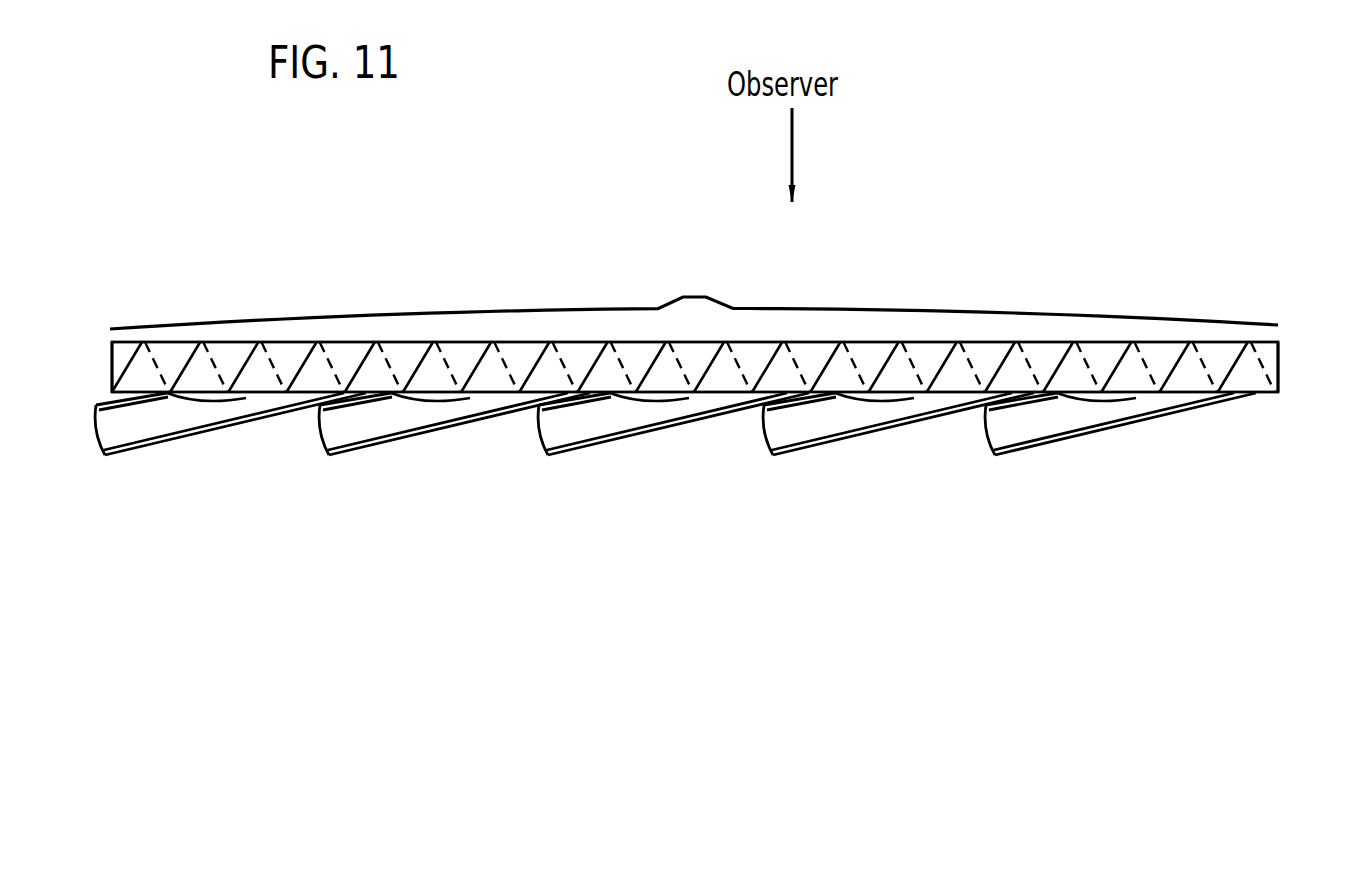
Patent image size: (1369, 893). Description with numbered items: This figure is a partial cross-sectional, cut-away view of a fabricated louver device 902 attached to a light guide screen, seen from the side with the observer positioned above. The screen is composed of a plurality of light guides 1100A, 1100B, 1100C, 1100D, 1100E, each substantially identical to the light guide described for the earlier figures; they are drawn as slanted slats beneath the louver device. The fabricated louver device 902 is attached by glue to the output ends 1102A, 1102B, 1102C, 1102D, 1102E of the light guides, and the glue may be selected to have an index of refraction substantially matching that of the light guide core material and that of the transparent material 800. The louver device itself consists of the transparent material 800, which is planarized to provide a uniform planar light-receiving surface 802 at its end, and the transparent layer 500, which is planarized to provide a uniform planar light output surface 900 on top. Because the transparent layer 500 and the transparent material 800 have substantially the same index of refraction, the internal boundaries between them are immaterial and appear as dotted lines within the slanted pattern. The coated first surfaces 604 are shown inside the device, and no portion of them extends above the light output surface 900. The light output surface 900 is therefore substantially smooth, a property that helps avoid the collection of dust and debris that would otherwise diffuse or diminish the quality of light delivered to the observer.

The light output surface 900 is at (1330, 275).
The fabricated louver device 902 is at (1162, 327).
The transparent layer 500 is at (1045, 353).
The transparent material 800 is at (1247, 377).
The light-receiving surface 802 is at (1267, 395).
The coated first surfaces 604 is at (112, 366).
The light guide 1100A is at (178, 442).
The light guide 1100B is at (390, 440).
The light guide 1100C is at (617, 438).
The light guide 1100D is at (830, 441).
The light guide 1100E is at (1043, 443).
The output end 1102A is at (246, 398).
The output end 1102B is at (470, 398).
The output end 1102C is at (689, 398).
The output end 1102D is at (914, 398).
The output end 1102E is at (1136, 398).